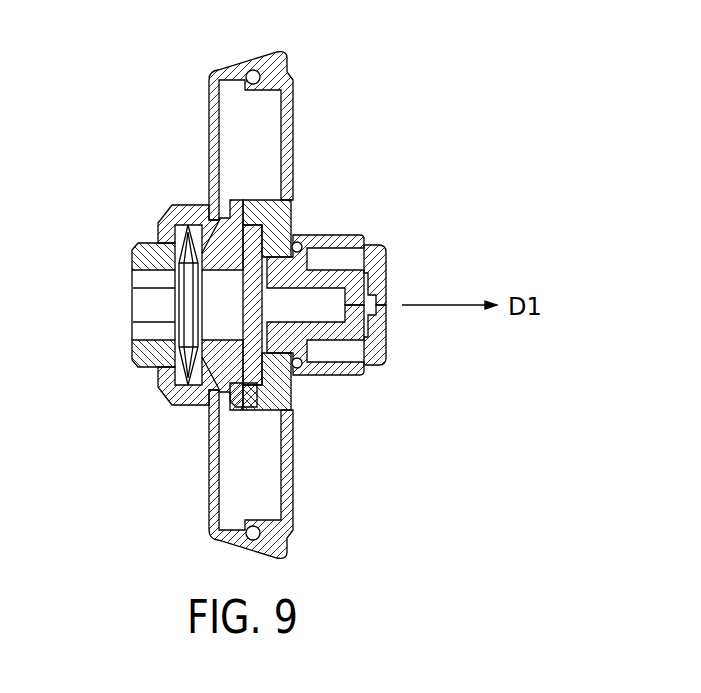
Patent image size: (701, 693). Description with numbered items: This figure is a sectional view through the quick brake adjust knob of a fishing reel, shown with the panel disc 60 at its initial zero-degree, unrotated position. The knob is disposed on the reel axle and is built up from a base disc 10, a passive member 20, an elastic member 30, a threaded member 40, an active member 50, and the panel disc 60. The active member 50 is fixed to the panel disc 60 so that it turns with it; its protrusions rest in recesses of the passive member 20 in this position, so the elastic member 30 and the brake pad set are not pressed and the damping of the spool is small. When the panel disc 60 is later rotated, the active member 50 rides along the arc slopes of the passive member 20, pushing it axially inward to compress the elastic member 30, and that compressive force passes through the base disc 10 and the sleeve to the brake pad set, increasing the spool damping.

The base disc 10 is at (186, 203).
The passive member 20 is at (243, 402).
The elastic member 30 is at (202, 397).
The threaded member 40 is at (333, 235).
The active member 50 is at (278, 390).
The panel disc 60 is at (293, 122).